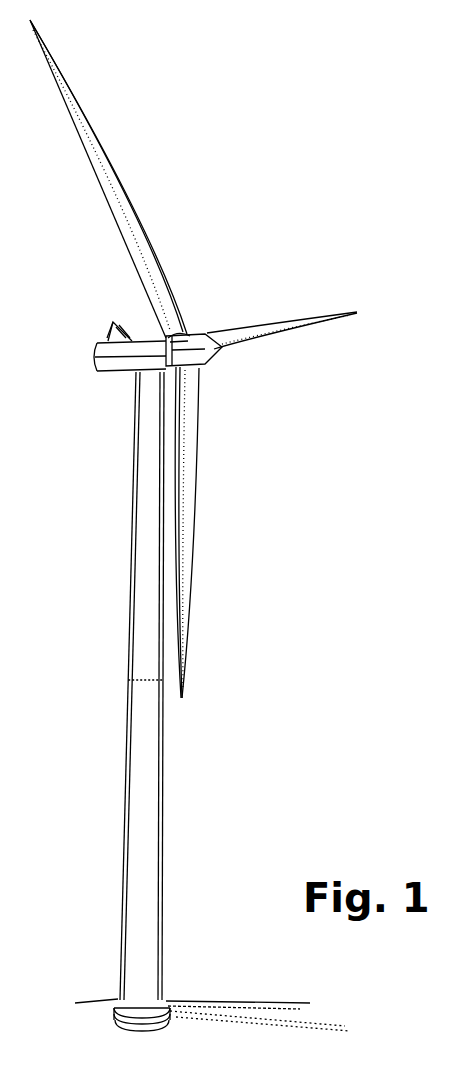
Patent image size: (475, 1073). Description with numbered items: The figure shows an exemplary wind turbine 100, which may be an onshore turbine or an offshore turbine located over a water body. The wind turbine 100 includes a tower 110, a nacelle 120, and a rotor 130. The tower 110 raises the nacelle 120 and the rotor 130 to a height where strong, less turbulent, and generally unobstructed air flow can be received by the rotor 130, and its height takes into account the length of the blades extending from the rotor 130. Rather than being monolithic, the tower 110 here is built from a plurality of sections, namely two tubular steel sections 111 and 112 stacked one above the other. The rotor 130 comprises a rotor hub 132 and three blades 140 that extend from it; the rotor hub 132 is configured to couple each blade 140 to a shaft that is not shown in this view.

The wind turbine 100 is at (300, 217).
The tower 110 is at (131, 577).
The tubular steel section 111 is at (126, 838).
The tubular steel section 112 is at (133, 513).
The nacelle 120 is at (94, 357).
The rotor 130 is at (200, 360).
The rotor hub 132 is at (189, 333).
The blade 140 is at (62, 98).